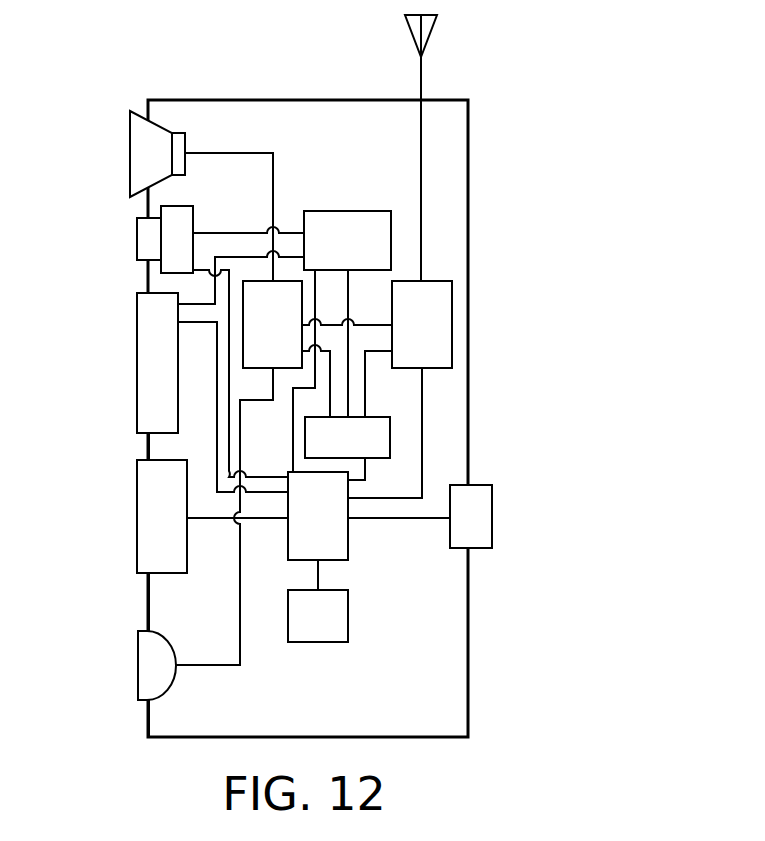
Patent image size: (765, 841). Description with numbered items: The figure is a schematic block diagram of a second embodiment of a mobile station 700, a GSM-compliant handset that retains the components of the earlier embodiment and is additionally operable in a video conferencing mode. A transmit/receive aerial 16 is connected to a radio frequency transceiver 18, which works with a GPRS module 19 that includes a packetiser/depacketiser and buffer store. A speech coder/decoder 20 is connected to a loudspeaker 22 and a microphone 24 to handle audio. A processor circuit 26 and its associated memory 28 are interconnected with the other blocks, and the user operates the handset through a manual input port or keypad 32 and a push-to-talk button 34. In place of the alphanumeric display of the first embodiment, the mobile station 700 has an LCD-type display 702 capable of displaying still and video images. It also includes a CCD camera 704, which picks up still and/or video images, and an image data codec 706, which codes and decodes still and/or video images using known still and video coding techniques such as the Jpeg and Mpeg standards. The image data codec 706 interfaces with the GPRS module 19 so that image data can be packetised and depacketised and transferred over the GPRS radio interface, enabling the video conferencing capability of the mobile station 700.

The mobile station 700 is at (470, 182).
The transmit/receive aerial 16 is at (425, 78).
The loudspeaker 22 is at (129, 153).
The CCD camera 704 is at (137, 244).
The LCD-type display 702 is at (137, 316).
The image data codec 706 is at (350, 210).
The speech coder/decoder 20 is at (284, 473).
The radio frequency transceiver 18 is at (400, 389).
The GPRS module 19 is at (391, 433).
The processor circuit 26 is at (350, 547).
The memory 28 is at (325, 645).
The manual input port (keypad) 32 is at (137, 516).
The microphone 24 is at (137, 666).
The push-to-talk button 34 is at (492, 516).